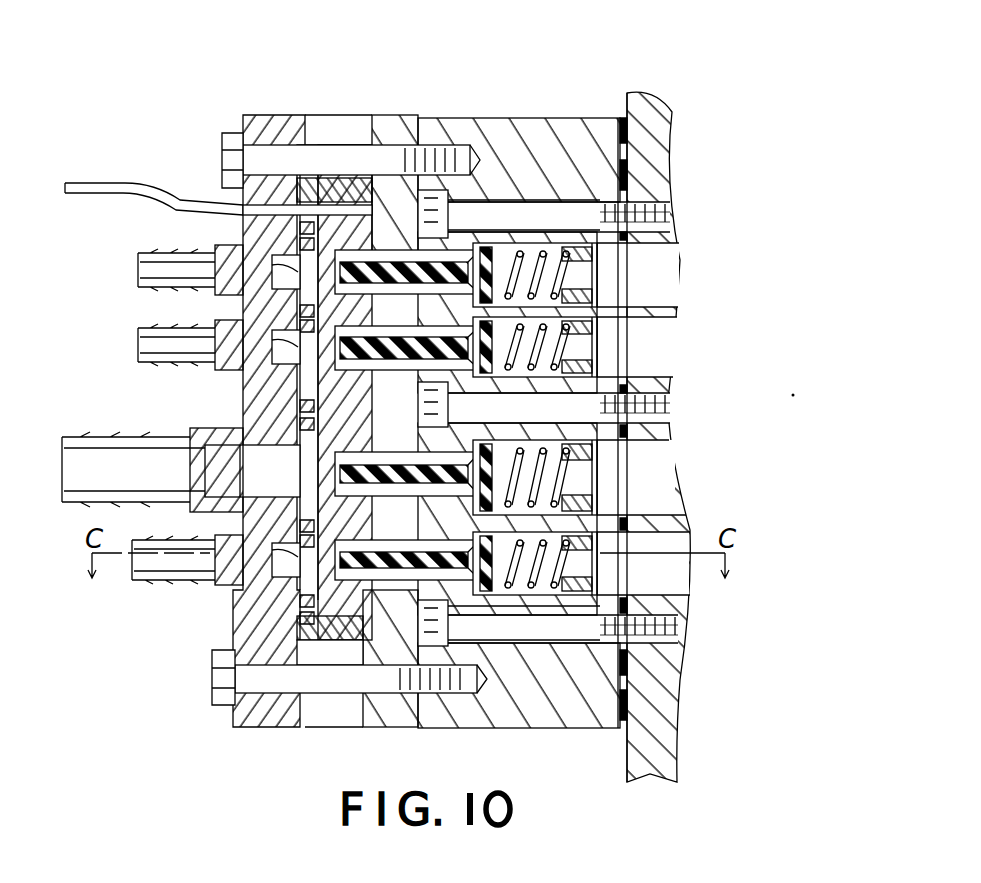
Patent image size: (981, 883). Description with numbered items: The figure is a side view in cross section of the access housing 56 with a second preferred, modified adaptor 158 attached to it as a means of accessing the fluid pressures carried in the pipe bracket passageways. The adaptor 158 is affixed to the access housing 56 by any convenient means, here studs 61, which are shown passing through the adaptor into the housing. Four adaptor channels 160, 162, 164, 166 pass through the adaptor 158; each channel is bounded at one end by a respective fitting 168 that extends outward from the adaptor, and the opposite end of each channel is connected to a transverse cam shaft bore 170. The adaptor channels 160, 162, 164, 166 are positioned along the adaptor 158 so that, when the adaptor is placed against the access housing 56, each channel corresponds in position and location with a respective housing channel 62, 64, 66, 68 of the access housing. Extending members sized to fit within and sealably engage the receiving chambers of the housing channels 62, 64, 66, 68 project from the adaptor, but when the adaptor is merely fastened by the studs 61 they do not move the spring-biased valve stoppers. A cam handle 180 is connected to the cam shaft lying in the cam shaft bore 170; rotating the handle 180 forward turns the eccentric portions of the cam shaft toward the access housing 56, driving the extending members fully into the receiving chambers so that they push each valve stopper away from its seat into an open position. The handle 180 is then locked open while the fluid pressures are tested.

The access housing 56 is at (572, 118).
The adaptor 158 is at (285, 115).
The studs 61 is at (225, 130).
The cam handle 180 is at (115, 186).
The fitting 168 is at (150, 252).
The adaptor channel 166 is at (270, 275).
The adaptor channel 164 is at (270, 347).
The adaptor channel 162 is at (296, 452).
The adaptor channel 160 is at (282, 540).
The cam shaft bore 170 is at (360, 378).
The housing channel 68 is at (613, 265).
The housing channel 66 is at (610, 337).
The housing channel 64 is at (605, 478).
The housing channel 62 is at (607, 573).